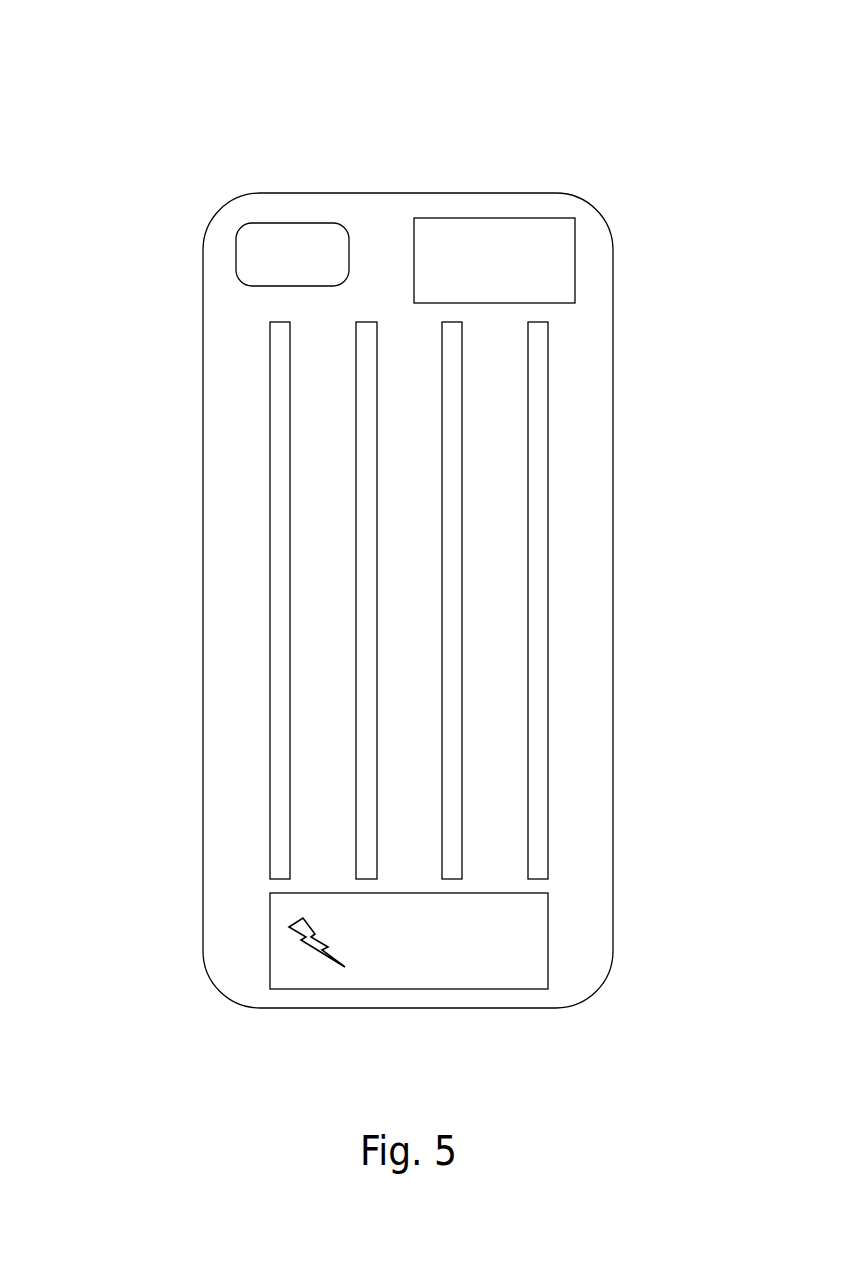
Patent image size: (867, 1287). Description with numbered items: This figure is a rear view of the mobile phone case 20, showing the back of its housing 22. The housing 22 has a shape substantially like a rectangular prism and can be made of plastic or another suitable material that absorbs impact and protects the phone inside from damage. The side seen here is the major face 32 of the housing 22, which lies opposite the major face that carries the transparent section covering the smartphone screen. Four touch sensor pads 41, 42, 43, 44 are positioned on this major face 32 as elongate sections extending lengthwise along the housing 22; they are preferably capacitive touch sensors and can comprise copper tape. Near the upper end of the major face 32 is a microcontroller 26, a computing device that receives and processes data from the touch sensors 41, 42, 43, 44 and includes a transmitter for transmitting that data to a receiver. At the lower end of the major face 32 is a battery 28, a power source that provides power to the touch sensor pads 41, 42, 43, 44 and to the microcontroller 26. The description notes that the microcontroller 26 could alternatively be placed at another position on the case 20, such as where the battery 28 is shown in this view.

The case 20 is at (153, 168).
The housing 22 is at (594, 337).
The microcontroller 26 is at (494, 258).
The battery 28 is at (395, 966).
The major face 32 is at (248, 719).
The touch sensor pad 41 is at (283, 382).
The touch sensor pad 42 is at (363, 573).
The touch sensor pad 43 is at (453, 518).
The touch sensor pad 44 is at (535, 768).